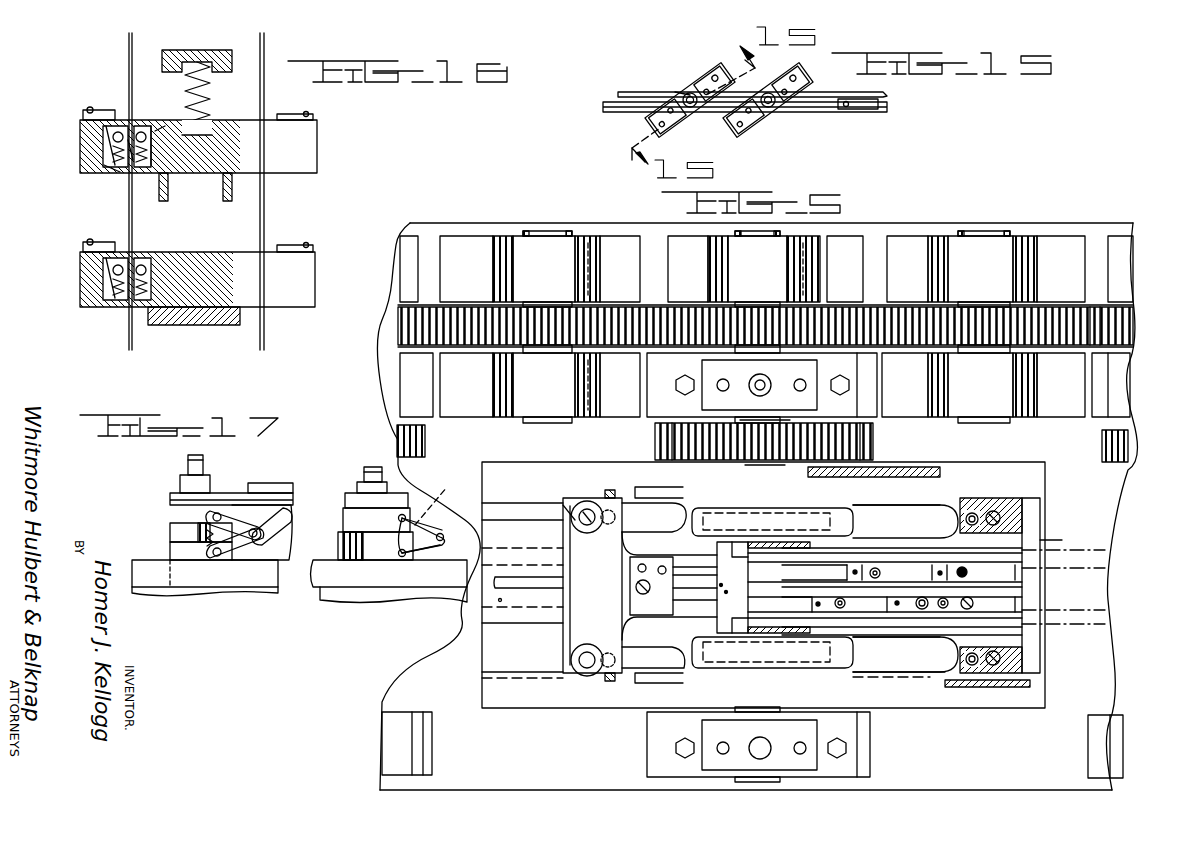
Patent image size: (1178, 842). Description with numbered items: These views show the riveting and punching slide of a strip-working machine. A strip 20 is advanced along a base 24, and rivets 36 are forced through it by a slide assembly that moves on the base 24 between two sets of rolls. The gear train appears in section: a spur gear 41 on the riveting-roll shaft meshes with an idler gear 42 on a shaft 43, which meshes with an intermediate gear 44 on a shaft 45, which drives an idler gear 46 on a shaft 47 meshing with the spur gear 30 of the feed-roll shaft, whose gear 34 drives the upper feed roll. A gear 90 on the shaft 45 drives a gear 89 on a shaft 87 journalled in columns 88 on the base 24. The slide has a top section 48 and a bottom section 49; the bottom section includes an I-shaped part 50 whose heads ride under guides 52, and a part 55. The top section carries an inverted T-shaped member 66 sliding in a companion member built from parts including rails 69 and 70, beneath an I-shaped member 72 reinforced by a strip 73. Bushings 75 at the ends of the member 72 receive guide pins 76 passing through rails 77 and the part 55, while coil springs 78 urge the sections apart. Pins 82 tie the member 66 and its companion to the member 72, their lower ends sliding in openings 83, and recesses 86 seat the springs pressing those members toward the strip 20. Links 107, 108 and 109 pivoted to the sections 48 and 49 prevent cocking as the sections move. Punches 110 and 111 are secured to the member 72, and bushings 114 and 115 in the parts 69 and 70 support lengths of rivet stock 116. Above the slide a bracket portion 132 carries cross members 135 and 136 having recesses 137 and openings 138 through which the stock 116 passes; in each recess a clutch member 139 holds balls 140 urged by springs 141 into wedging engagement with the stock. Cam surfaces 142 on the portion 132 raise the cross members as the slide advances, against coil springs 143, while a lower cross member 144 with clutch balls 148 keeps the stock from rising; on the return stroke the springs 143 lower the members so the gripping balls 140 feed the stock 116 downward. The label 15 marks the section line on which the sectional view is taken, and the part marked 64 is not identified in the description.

In FIG. 17, the carriage 15 is at (355, 482).
In FIG. 5, the strip 20 is at (1065, 548).
In FIG. 5, the base 24 is at (1112, 688).
In FIG. 5, the spur gear 30 is at (1120, 326).
In FIG. 5, the gear 34 is at (1102, 445).
In FIG. 5, the rivets 36 is at (500, 603).
In FIG. 5, the spur gear 41 is at (400, 325).
In FIG. 5, the idler gear 42 is at (478, 320).
In FIG. 5, the shaft 43 is at (548, 230).
In FIG. 5, the intermediate gear 44 is at (858, 318).
In FIG. 5, the shaft 45 is at (795, 232).
In FIG. 5, the idler gear 46 is at (1052, 318).
In FIG. 5, the shaft 47 is at (985, 230).
In FIG. 17, the top section 48 is at (161, 501).
In FIG. 5, the bottom section 49 is at (934, 649).
In FIG. 17, the bottom section 49 is at (152, 582).
In FIG. 5, the I-shaped part 50 is at (945, 520).
In FIG. 17, the I-shaped part 50 is at (248, 580).
In FIG. 5, the guides 52 is at (525, 507).
In FIG. 17, the part 55 is at (170, 550).
In FIG. 5, the slide bar 64 is at (730, 508).
In FIG. 5, the member 66 is at (915, 580).
In FIG. 5, the part 69 is at (812, 580).
In FIG. 5, the part 70 is at (780, 613).
In FIG. 5, the member 72 is at (605, 635).
In FIG. 17, the member 72 is at (226, 493).
In FIG. 5, the reinforcing strip 73 is at (659, 611).
In FIG. 17, the reinforcing strip 73 is at (293, 488).
In FIG. 5, the bushings 75 is at (578, 503).
In FIG. 17, the bushings 75 is at (208, 482).
In FIG. 5, the guide pins 76 is at (587, 508).
In FIG. 17, the guide pins 76 is at (180, 460).
In FIG. 5, the rails 77 is at (664, 524).
In FIG. 17, the rails 77 is at (175, 522).
In FIG. 5, the coil springs 78 is at (972, 516).
In FIG. 5, the pins 82 is at (638, 568).
In FIG. 5, the openings 83 is at (668, 570).
In FIG. 5, the recesses 86 is at (928, 610).
In FIG. 5, the shaft 87 is at (768, 392).
In FIG. 5, the columns 88 is at (880, 400).
In FIG. 5, the gear 89 is at (812, 430).
In FIG. 5, the gear 90 is at (875, 442).
In FIG. 17, the links 107 is at (219, 560).
In FIG. 17, the link 108 is at (290, 530).
In FIG. 5, the links 109 is at (442, 496).
In FIG. 17, the links 109 is at (418, 530).
In FIG. 5, the punches 110 is at (857, 570).
In FIG. 5, the punches 111 is at (947, 570).
In FIG. 5, the bushings 114 is at (890, 575).
In FIG. 5, the bushings 115 is at (968, 572).
In FIG. 16, the bushing stock 116 is at (148, 236).
In FIG. 16, the portion 132 is at (222, 190).
In FIG. 15, the portion 132 is at (828, 113).
In FIG. 15, the cross member 135 is at (760, 122).
In FIG. 16, the cross member 136 is at (320, 163).
In FIG. 15, the cross member 136 is at (683, 122).
In FIG. 16, the recesses 137 is at (110, 168).
In FIG. 16, the opening 138 is at (128, 168).
In FIG. 16, the clutch member 139 is at (147, 124).
In FIG. 16, the balls 140 is at (105, 140).
In FIG. 16, the springs 141 is at (140, 175).
In FIG. 15, the cam surfaces 142 is at (665, 96).
In FIG. 16, the coil springs 143 is at (215, 122).
In FIG. 16, the cross member 144 is at (318, 283).
In FIG. 16, the clutch balls 148 is at (104, 272).